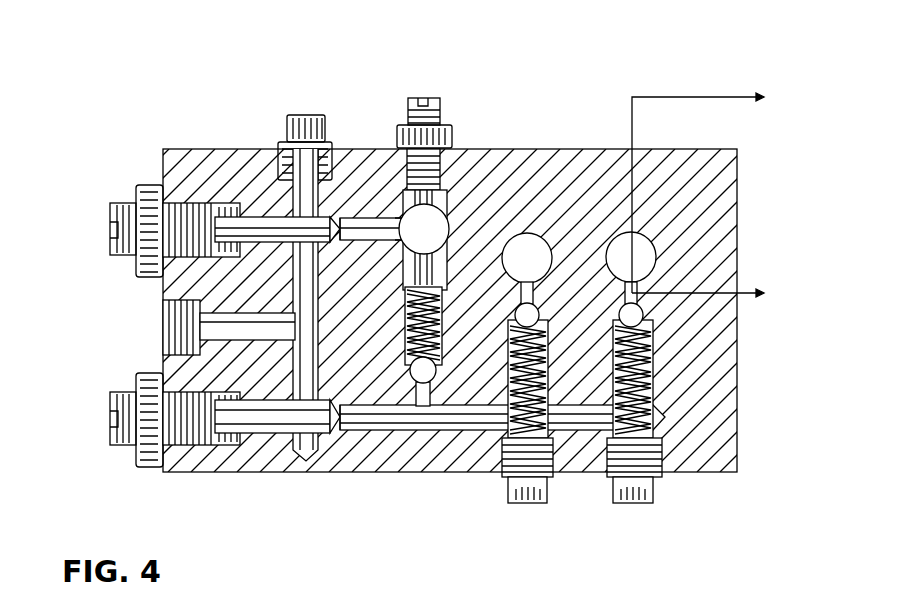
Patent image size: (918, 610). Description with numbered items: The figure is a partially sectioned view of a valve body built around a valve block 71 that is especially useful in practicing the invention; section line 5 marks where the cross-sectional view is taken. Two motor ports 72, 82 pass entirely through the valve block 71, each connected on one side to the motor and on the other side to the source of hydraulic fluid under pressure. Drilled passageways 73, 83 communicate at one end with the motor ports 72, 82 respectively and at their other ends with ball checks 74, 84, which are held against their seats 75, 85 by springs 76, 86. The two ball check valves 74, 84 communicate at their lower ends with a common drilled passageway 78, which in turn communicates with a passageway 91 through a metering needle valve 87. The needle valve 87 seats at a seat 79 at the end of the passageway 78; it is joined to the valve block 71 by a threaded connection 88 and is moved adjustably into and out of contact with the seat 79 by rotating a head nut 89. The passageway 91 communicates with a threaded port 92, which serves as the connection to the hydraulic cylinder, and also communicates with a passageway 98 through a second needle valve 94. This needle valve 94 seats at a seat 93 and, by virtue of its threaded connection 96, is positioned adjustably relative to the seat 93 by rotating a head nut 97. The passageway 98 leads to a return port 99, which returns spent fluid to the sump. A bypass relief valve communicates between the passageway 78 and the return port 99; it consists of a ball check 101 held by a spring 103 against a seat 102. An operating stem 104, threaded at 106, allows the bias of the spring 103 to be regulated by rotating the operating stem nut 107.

The section line 5- 5 is at (707, 196).
The valve block 71 is at (738, 167).
The motor port 72 is at (643, 258).
The drilled passageway 73 is at (638, 280).
The ball check 74 is at (643, 312).
The seat 75 is at (640, 318).
The spring 76 is at (647, 388).
The drilled passageway 78 is at (467, 417).
The seat 79 is at (337, 447).
The motor port 82 is at (527, 245).
The drilled passageway 83 is at (545, 290).
The ball check 84 is at (514, 312).
The seat 85 is at (549, 385).
The spring 86 is at (546, 445).
The metering needle valve 87 is at (277, 420).
The threaded connection 88 is at (193, 440).
The head nut 89 is at (122, 446).
The passageway 91 is at (302, 270).
The threaded port 92 is at (172, 323).
The seat 93 is at (335, 212).
The needle valve 94 is at (265, 214).
The threaded connection 96 is at (185, 205).
The head nut 97 is at (110, 213).
The passageway 98 is at (363, 213).
The return port 99 is at (395, 216).
The ball check 101 is at (420, 400).
The seat 102 is at (417, 380).
The spring 103 is at (398, 366).
The operating stem 104 is at (423, 217).
The threads 106 is at (447, 186).
The operating stem nut 107 is at (436, 98).